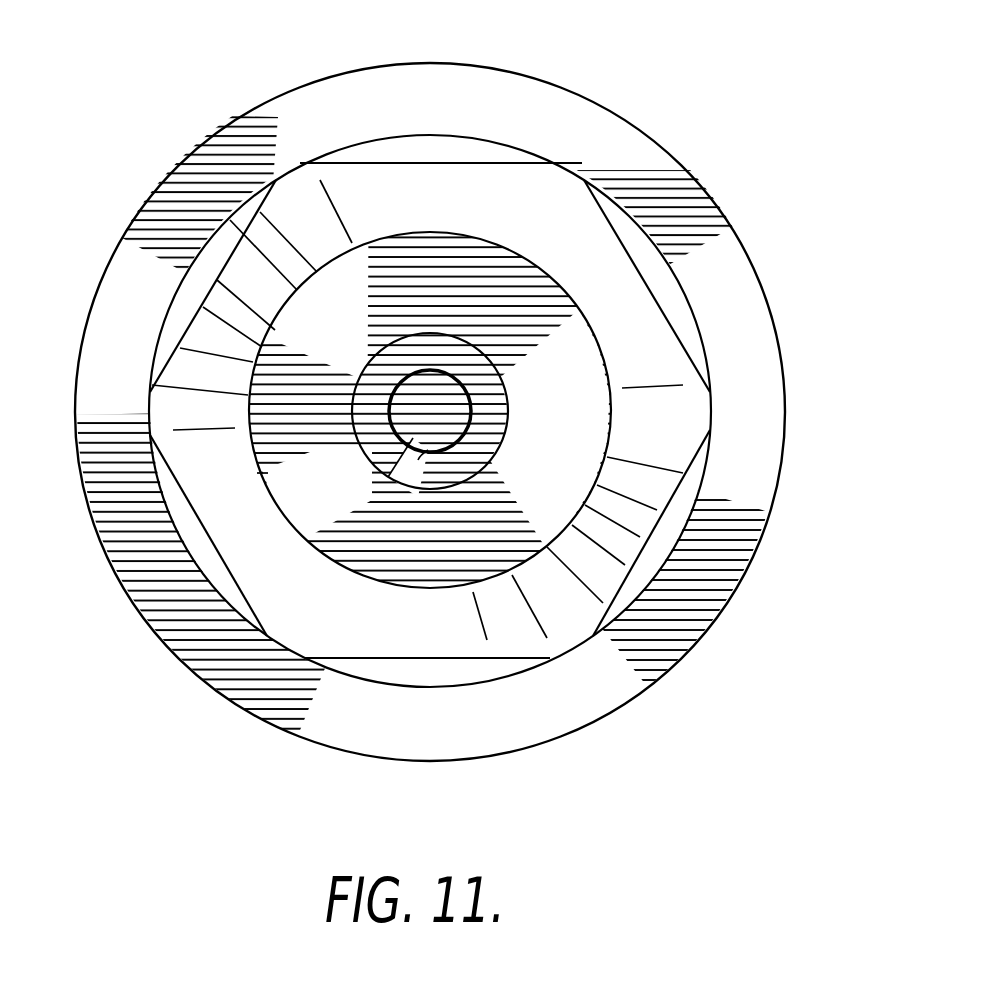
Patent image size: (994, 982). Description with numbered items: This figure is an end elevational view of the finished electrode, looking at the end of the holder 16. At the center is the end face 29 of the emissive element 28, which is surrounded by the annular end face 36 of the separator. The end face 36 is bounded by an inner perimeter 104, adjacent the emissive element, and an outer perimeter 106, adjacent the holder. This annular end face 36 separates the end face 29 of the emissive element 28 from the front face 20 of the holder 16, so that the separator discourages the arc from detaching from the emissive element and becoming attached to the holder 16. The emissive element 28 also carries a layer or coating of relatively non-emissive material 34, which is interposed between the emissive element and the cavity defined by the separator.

The holder 16 is at (770, 256).
The front face of the holder 20 is at (303, 343).
The emissive element 28 is at (387, 420).
The end face of the emissive element 29 is at (432, 405).
The end face of the separator 36 is at (419, 350).
The relatively non-emissive material 34 is at (440, 433).
The inner perimeter 104 is at (428, 450).
The outer perimeter 106 is at (413, 438).